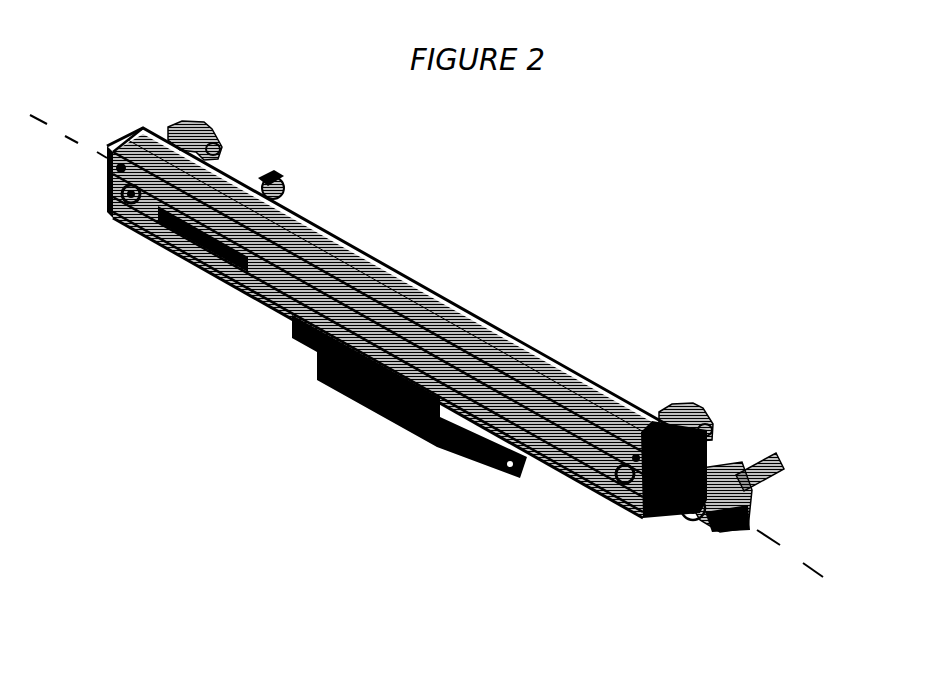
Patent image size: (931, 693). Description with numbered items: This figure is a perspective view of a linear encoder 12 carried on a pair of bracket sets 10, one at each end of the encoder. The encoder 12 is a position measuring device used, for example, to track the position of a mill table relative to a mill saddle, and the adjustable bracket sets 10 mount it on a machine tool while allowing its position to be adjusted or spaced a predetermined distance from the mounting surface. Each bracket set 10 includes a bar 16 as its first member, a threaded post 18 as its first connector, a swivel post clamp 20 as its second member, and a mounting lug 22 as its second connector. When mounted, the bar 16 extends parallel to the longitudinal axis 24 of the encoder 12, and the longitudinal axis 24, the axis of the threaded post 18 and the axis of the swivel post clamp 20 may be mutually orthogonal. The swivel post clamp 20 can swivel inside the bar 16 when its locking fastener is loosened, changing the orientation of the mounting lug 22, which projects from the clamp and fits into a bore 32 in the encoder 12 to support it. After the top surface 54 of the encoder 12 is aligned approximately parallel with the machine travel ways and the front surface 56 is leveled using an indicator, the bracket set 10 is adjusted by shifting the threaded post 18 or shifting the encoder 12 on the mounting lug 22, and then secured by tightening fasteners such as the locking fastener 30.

The bracket set 10 is at (445, 337).
The linear encoder 12 is at (573, 368).
The bar 16 is at (722, 535).
The threaded post 18 is at (278, 168).
The swivel post clamp 20 is at (186, 122).
The mounting lug 22 is at (110, 210).
The longitudinal axis 24 is at (855, 592).
The locking fastener 30 is at (707, 423).
The bore 32 is at (132, 208).
The top surface 54 is at (363, 268).
The front surface 56 is at (193, 257).